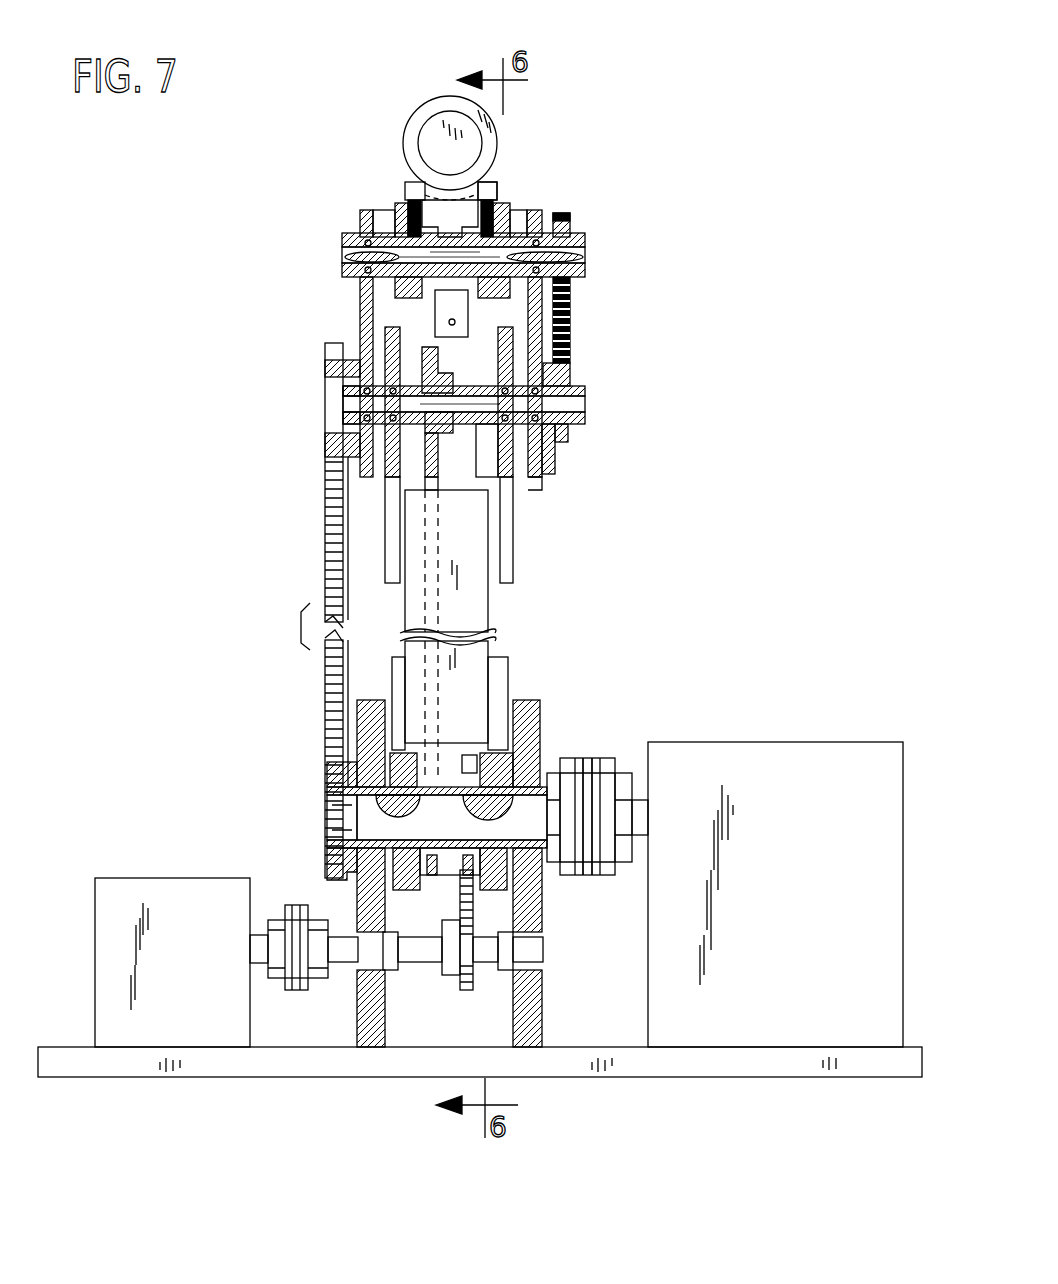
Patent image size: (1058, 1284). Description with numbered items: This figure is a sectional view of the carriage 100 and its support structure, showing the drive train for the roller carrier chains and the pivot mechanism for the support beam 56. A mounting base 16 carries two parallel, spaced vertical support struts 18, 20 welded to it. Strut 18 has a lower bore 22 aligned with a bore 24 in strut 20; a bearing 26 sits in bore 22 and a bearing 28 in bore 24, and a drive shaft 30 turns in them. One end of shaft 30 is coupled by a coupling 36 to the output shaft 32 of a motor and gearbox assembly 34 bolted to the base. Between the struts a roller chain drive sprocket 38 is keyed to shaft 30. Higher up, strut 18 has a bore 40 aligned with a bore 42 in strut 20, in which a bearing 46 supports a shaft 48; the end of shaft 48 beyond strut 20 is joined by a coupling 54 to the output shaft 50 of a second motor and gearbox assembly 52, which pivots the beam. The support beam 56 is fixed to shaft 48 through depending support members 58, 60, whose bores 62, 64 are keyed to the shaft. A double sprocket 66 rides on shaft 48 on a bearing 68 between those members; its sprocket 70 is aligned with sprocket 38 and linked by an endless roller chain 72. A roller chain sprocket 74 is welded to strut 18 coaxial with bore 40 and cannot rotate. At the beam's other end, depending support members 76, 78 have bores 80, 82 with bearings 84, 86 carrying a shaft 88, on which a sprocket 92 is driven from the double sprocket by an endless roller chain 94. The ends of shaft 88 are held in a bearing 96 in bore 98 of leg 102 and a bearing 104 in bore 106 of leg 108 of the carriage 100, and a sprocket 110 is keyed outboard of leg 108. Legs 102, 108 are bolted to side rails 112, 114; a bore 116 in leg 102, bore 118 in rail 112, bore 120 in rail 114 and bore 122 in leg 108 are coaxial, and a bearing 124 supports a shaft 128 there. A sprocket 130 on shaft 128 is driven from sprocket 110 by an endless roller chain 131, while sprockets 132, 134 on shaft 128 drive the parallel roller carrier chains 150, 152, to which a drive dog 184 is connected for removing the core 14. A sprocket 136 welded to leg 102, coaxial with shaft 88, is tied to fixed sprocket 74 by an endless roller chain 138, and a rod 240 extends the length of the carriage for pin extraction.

The carriage 100 is at (298, 156).
The core 14 is at (448, 96).
The mounting base 16 is at (596, 1047).
The vertical support strut 18 is at (372, 1050).
The vertical support strut 20 is at (542, 1050).
The bore 22 is at (362, 944).
The bore 24 is at (545, 946).
The bearing 26 is at (345, 965).
The bearing 28 is at (545, 962).
The drive shaft 30 is at (418, 964).
The output shaft 32 is at (262, 935).
The motor and gearbox assembly 34 is at (175, 878).
The coupling 36 is at (283, 990).
The roller chain drive sprocket 38 is at (450, 977).
The bore 40 is at (400, 838).
The bore 42 is at (535, 765).
The bearing 46 is at (560, 790).
The shaft 48 is at (575, 875).
The output shaft 50 is at (636, 798).
The motor and gearbox assembly 52 is at (762, 742).
The coupling 54 is at (598, 758).
The support beam 56 is at (493, 645).
The depending support member 58 is at (392, 680).
The depending support member 60 is at (510, 673).
The bore 62 is at (410, 835).
The bore 64 is at (490, 842).
The double sprocket 66 is at (462, 758).
The bearing 68 is at (458, 842).
The sprocket 70 is at (478, 755).
The endless roller chain 72 is at (459, 895).
The roller chain sprocket 74 is at (330, 770).
The depending support member 76 is at (384, 526).
The depending support member 78 is at (514, 535).
The bore 80 is at (330, 446).
The bore 82 is at (492, 424).
The bearing 84 is at (396, 350).
The bearing 86 is at (502, 350).
The shaft 88 is at (582, 424).
The sprocket 92 is at (440, 380).
The endless roller chain 94 is at (443, 480).
The bearing 96 is at (345, 390).
The bore 98 is at (345, 416).
The leg 102 is at (362, 285).
The bearing 104 is at (570, 365).
The bore 106 is at (550, 442).
The leg 108 is at (536, 480).
The sprocket 110 is at (587, 402).
The side rail 112 is at (398, 205).
The side rail 114 is at (512, 208).
The bore 116 is at (362, 214).
The bore 118 is at (372, 258).
The bore 120 is at (556, 258).
The bore 122 is at (536, 220).
The bearing 124 is at (358, 241).
The shaft 128 is at (587, 252).
The sprocket 130 is at (571, 232).
The endless roller chain 131 is at (572, 320).
The sprocket 132 is at (400, 292).
The sprocket 134 is at (477, 227).
The sprocket 136 is at (326, 366).
The endless roller chain 138 is at (324, 555).
The roller carrier chain 150 is at (497, 183).
The roller carrier chain 152 is at (412, 200).
The drive dog 184 is at (434, 185).
The rod 240 is at (456, 322).